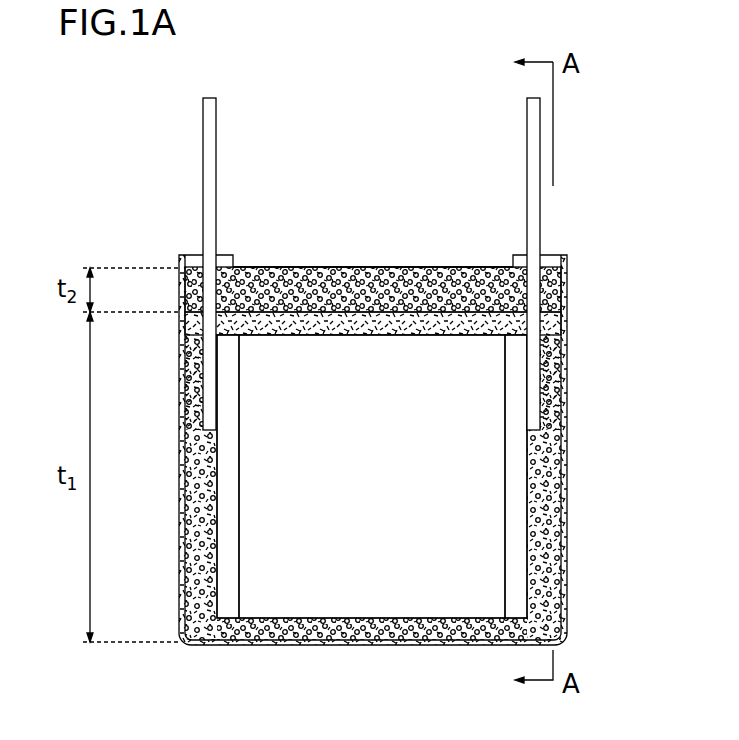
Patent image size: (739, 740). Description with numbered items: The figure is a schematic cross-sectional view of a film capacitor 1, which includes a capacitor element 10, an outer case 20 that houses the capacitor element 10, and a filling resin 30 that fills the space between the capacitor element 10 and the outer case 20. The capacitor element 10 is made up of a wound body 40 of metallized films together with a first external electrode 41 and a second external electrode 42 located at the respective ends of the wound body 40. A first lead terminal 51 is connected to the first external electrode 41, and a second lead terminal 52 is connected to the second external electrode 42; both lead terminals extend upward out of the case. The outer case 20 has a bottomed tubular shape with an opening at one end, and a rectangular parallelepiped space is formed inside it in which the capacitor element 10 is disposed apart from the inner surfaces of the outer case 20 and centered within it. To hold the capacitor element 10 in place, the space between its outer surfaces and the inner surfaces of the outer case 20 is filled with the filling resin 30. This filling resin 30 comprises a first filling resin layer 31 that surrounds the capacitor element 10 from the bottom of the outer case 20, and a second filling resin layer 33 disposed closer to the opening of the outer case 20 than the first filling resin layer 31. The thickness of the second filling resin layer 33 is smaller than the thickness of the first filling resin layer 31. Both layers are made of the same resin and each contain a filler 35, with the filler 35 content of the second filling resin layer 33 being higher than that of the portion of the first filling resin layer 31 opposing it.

The film capacitor 1 is at (154, 164).
The capacitor element 10 is at (398, 397).
The outer case 20 is at (562, 588).
The filling resin 30 is at (437, 348).
The first filling resin layer 31 is at (412, 371).
The second filling resin layer 33 is at (558, 290).
The filler 35 is at (452, 268).
The wound body 40 is at (280, 560).
The first external electrode 41 is at (227, 512).
The second external electrode 42 is at (518, 512).
The first lead terminal 51 is at (207, 235).
The second lead terminal 52 is at (550, 233).